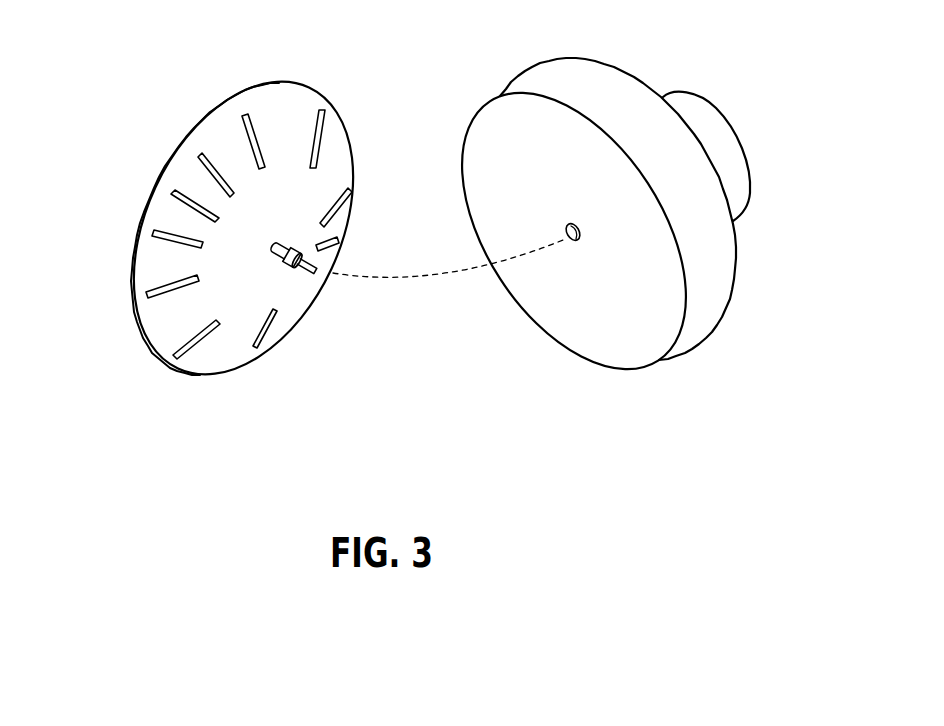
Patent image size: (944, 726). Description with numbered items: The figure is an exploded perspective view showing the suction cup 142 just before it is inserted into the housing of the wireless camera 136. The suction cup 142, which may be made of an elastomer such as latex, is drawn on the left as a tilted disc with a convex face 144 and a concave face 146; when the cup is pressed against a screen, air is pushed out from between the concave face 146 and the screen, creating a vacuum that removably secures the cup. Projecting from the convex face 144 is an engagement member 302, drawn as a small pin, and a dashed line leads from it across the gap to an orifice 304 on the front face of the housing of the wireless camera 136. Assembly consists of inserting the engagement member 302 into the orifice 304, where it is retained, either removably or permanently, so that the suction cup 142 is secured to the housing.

The wireless camera 136 is at (740, 144).
The suction cup 142 is at (308, 97).
The convex face 144 is at (160, 331).
The concave face 146 is at (139, 252).
The engagement member 302 is at (322, 266).
The orifice 304 is at (567, 240).